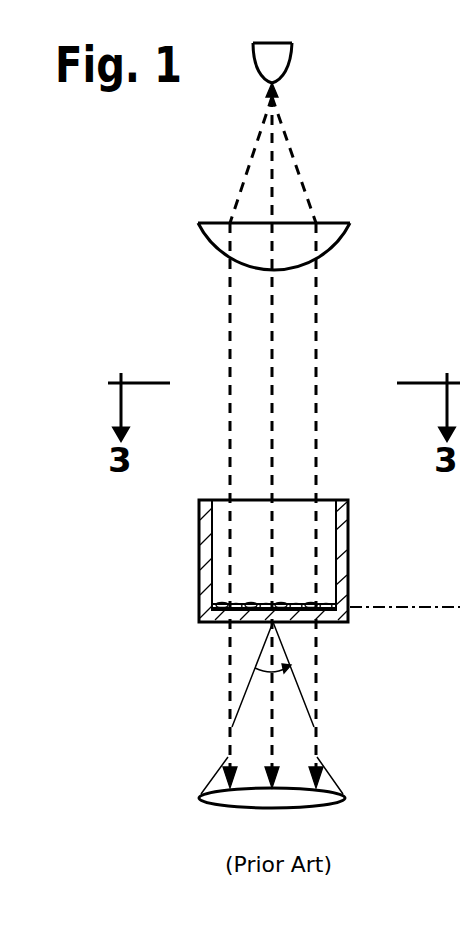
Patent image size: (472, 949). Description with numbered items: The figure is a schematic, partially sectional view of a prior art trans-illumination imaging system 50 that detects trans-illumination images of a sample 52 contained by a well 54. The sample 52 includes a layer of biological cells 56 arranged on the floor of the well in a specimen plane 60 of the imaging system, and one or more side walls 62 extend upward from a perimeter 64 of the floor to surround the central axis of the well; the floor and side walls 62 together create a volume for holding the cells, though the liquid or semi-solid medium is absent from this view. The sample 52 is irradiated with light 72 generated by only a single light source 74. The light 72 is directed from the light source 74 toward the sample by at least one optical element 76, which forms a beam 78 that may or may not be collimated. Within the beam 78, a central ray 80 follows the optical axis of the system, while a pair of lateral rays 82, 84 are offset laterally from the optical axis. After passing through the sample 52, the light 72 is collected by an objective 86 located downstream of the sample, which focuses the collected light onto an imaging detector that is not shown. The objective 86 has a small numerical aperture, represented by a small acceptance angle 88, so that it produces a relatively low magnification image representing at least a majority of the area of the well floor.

The imaging system 50 is at (153, 178).
The sample 52 is at (222, 592).
The well 54 is at (210, 518).
The biological cells 56 is at (328, 604).
The specimen plane 60 is at (410, 606).
The side walls 62 is at (342, 538).
The perimeter 64 is at (214, 606).
The light 72 is at (302, 147).
The light source 74 is at (276, 42).
The optical element 76 is at (336, 248).
The beam 78 is at (334, 342).
The central ray 80 is at (274, 451).
The lateral ray 82 is at (228, 451).
The lateral ray 84 is at (318, 451).
The objective 86 is at (322, 808).
The acceptance angle 88 is at (280, 674).